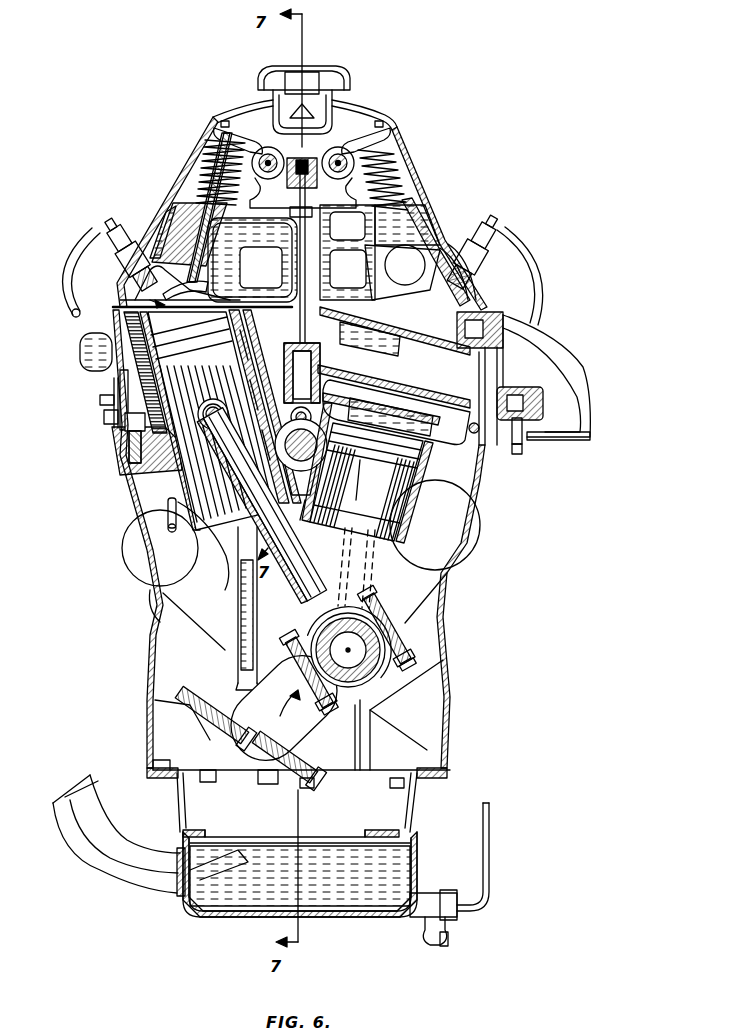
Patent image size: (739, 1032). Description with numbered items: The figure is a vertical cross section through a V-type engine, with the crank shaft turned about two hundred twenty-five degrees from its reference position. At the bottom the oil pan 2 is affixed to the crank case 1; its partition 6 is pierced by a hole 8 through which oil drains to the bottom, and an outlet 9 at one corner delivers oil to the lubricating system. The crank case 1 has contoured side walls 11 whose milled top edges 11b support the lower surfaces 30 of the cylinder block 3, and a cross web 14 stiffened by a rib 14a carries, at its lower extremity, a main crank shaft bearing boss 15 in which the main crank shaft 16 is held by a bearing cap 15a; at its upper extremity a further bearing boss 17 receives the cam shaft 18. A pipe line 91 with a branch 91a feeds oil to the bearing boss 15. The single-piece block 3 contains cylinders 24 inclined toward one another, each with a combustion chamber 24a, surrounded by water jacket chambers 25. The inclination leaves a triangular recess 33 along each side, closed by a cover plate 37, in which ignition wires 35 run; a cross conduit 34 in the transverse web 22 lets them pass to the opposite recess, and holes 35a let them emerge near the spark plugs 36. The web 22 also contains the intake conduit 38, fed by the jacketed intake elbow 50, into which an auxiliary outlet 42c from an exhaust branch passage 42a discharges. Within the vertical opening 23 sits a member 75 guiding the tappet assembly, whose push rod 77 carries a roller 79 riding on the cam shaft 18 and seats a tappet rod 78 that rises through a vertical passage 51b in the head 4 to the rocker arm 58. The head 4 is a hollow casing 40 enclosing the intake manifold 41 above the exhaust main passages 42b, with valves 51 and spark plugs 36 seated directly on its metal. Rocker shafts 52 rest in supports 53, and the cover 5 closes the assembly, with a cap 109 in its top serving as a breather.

The crank case 1 is at (152, 636).
The oil pan 2 is at (444, 808).
The cylinder block 3 is at (110, 310).
The head 4 is at (446, 250).
The cover 5 is at (215, 114).
The partition 6 is at (388, 832).
The hole 8 is at (314, 840).
The outlet 9 is at (415, 898).
The side wall 11 is at (448, 634).
The top edge 11b is at (124, 448).
The cross web 14 is at (428, 574).
The rib 14a is at (160, 606).
The main crank shaft bearing boss 15 is at (234, 684).
The bearing cap 15a is at (352, 712).
The main crank shaft 16 is at (262, 716).
The bearing boss 17 is at (366, 482).
The cam shaft 18 is at (333, 456).
The transverse web 22 is at (394, 392).
The vertical opening 23 is at (240, 340).
The cylinder 24 is at (178, 484).
The combustion chamber 24a is at (150, 306).
The water jacket chamber 25 is at (116, 404).
The lower surface 30 is at (112, 428).
The triangular recess 33 is at (102, 402).
The cross conduit 34 is at (406, 478).
The ignition wire 35 is at (110, 388).
The hole 35a is at (80, 350).
The spark plug 36 is at (134, 234).
The cover plate 37 is at (480, 312).
The conduit 38 is at (396, 401).
The hollow casing 40 is at (173, 207).
The intake manifold 41 is at (347, 252).
The branch passage 42a is at (436, 228).
The main passage 42b is at (287, 260).
The auxiliary outlet 42c is at (466, 240).
The jacketed intake elbow 50 is at (548, 380).
The valve 51 is at (196, 282).
The vertical passage 51b is at (314, 216).
The rocker shaft 52 is at (262, 150).
The support 53 is at (322, 190).
The rocker arm 58 is at (216, 131).
The member 75 is at (288, 362).
The push rod 77 is at (308, 360).
The tappet rod 78 is at (298, 220).
The roller 79 is at (353, 465).
The pipe line 91 is at (166, 526).
The branch 91a is at (226, 556).
The cap 109 is at (320, 72).